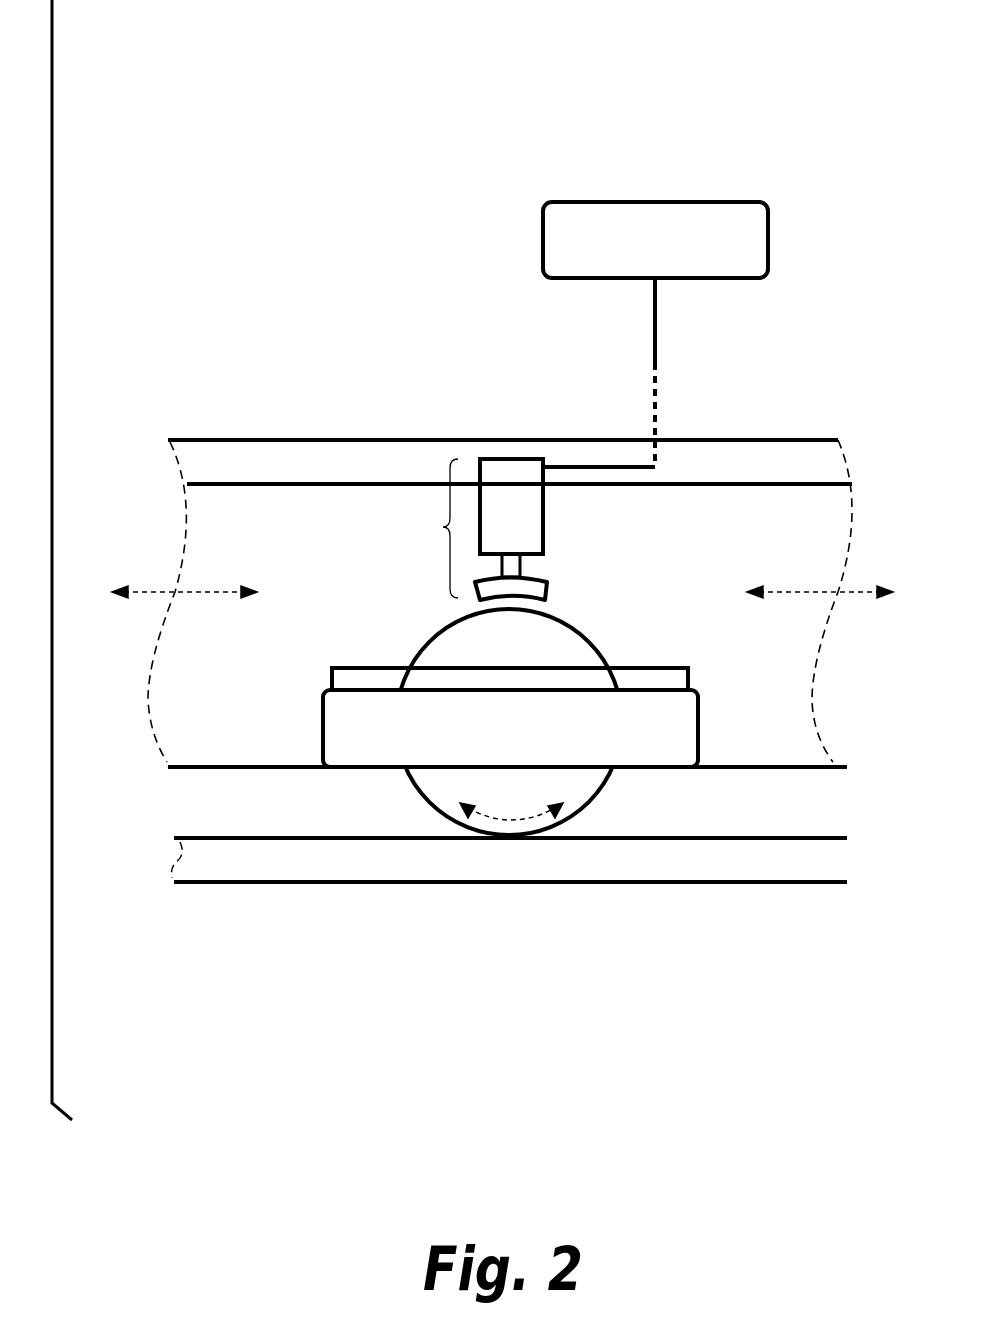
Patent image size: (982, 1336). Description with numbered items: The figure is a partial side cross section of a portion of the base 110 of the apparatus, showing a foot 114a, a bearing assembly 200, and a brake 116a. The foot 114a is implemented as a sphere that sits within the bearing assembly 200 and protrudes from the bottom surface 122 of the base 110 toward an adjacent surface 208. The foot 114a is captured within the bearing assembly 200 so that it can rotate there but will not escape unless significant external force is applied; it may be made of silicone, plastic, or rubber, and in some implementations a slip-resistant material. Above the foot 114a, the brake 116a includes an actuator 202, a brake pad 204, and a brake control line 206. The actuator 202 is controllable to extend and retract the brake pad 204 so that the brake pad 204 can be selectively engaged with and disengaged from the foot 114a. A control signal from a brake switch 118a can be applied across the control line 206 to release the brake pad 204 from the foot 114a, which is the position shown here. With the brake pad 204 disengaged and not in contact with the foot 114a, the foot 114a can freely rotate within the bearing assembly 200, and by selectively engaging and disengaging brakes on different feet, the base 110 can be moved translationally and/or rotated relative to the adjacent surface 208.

The base 110 is at (220, 470).
The brake switch 118a is at (655, 240).
The brake control line 206 is at (608, 467).
The brake 116a is at (510, 529).
The actuator 202 is at (522, 542).
The brake pad 204 is at (533, 590).
The foot 114a is at (448, 643).
The bearing assembly 200 is at (345, 731).
The bottom surface 122 is at (733, 767).
The adjacent surface 208 is at (220, 856).